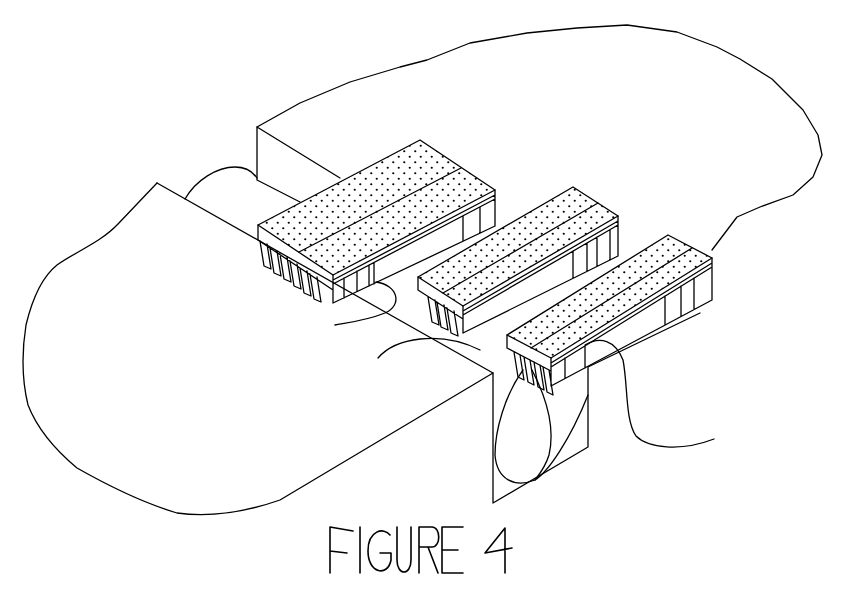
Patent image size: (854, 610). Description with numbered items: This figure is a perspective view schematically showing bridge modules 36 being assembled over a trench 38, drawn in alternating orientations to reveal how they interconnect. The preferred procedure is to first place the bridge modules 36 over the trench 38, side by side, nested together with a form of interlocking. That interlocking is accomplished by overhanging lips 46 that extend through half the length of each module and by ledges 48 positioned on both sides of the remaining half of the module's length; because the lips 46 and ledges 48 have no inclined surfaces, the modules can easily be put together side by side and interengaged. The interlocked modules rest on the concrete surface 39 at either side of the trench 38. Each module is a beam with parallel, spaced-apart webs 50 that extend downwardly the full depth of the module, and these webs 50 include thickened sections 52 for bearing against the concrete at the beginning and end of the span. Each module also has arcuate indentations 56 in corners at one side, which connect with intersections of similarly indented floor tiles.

The bridge module 36 is at (383, 162).
The trench 38 is at (637, 362).
The concrete surface 39 is at (552, 135).
The overhanging lip 46 is at (646, 248).
The ledge 48 is at (616, 411).
The web 50 is at (383, 317).
The thickened section 52 is at (432, 339).
The arcuate indentation 56 is at (659, 268).